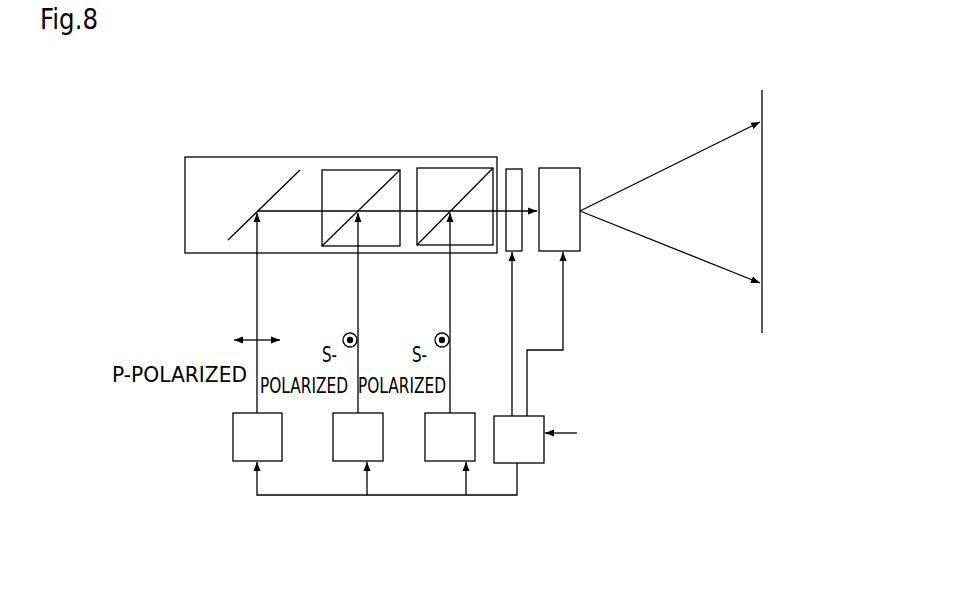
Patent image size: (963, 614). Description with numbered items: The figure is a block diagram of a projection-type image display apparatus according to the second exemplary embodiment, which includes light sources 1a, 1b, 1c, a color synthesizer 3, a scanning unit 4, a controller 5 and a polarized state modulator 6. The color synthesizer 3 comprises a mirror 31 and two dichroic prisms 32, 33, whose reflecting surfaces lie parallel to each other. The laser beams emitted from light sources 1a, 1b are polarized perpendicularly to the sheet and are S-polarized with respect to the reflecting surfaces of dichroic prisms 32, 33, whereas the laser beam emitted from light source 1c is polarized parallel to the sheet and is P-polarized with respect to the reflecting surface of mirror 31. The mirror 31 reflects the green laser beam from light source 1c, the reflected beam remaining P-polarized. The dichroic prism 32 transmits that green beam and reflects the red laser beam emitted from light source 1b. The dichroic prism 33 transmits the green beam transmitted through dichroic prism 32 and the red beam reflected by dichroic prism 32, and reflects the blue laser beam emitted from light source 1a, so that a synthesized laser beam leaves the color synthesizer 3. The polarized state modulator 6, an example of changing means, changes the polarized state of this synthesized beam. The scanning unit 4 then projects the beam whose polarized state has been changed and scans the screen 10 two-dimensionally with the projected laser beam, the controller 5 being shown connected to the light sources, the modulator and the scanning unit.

The light source 1a is at (455, 461).
The light source 1b is at (355, 461).
The light source 1c is at (242, 461).
The color synthesizer 3 is at (185, 238).
The mirror 31 is at (245, 215).
The dichroic prism 32 is at (338, 168).
The dichroic prism 33 is at (453, 168).
The scanning unit 4 is at (560, 167).
The controller 5 is at (545, 460).
The polarized state modulator 6 is at (512, 167).
The screen 10 is at (762, 333).